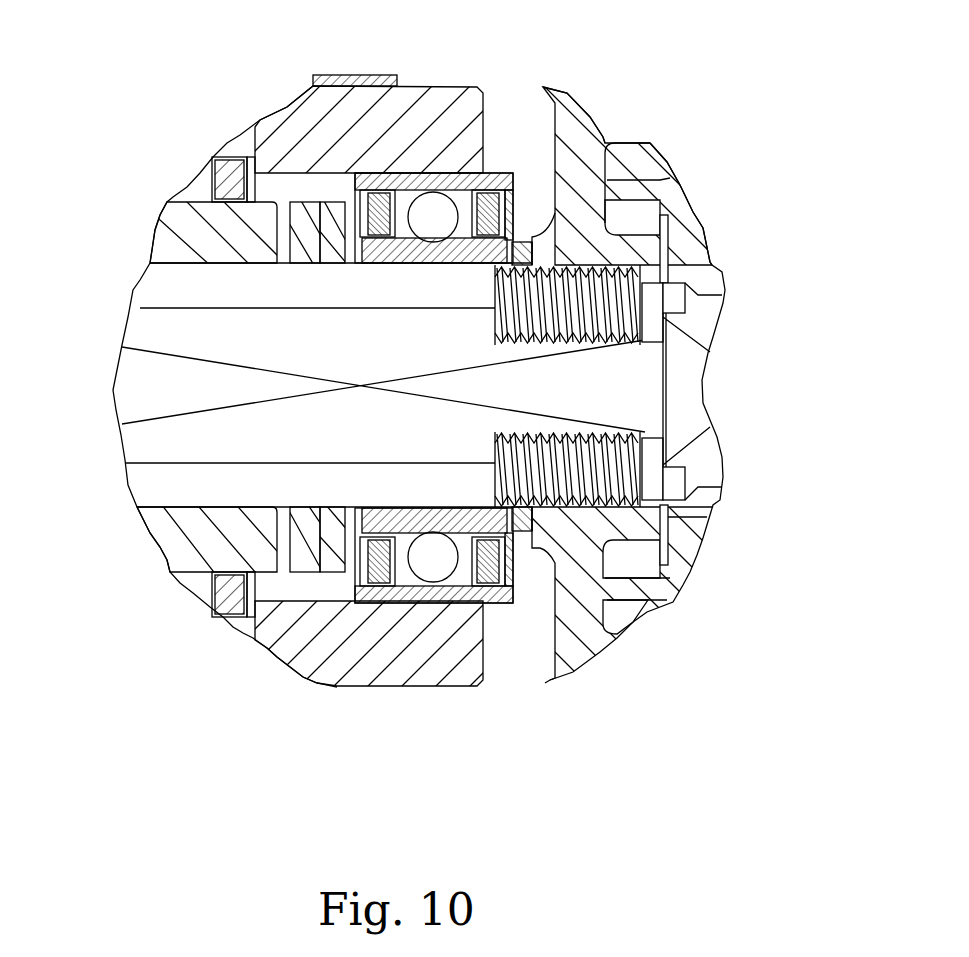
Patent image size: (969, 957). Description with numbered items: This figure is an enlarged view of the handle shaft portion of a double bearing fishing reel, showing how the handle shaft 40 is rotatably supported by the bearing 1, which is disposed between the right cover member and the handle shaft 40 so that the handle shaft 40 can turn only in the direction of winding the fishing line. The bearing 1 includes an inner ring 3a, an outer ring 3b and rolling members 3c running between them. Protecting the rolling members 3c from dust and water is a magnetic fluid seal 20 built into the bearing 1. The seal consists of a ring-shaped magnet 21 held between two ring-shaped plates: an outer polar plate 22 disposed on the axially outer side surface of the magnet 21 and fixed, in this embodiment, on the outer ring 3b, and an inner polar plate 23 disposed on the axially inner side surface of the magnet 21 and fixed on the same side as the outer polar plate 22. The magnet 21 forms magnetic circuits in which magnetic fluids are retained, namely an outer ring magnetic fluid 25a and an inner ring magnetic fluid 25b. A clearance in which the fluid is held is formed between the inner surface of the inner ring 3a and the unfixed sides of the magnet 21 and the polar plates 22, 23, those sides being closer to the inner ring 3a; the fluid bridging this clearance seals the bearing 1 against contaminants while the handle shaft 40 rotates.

The bearing 1 is at (495, 163).
The inner ring 3a is at (362, 522).
The outer ring 3b is at (418, 595).
The rolling members 3c is at (438, 570).
The magnetic fluid seal 20 is at (343, 190).
The ring-shaped magnet 21 is at (492, 197).
The outer polar plate 22 is at (512, 567).
The inner polar plate 23 is at (463, 220).
The outer ring magnetic fluid 25a is at (490, 588).
The inner ring magnetic fluid 25b is at (487, 543).
The handle shaft 40 is at (627, 387).